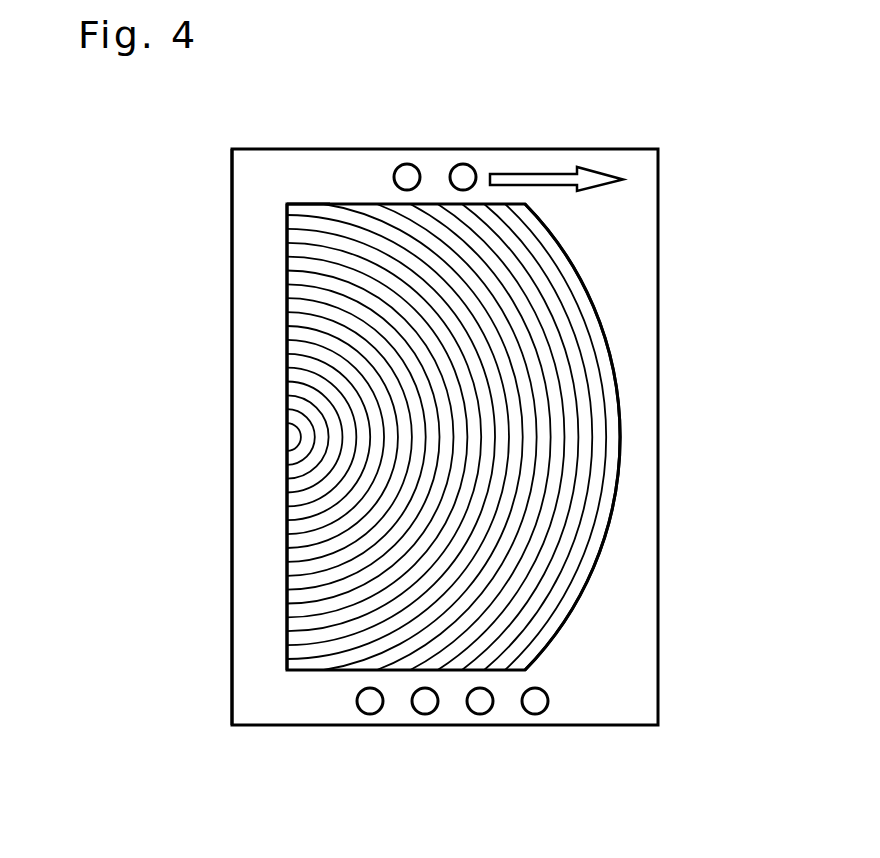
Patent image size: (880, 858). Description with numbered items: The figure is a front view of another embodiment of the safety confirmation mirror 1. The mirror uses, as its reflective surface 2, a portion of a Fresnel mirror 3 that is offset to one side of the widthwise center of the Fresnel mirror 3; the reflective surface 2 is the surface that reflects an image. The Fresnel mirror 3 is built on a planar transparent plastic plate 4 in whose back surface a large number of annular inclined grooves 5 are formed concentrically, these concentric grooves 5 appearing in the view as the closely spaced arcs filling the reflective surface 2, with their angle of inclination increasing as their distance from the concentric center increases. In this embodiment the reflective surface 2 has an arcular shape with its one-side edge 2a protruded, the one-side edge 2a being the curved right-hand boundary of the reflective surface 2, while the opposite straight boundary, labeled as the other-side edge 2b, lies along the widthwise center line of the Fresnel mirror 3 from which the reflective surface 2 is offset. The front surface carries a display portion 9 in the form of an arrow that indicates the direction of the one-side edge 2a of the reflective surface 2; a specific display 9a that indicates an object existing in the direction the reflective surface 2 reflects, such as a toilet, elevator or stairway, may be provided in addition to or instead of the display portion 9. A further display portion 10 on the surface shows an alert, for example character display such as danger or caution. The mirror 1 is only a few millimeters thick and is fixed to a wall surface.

The safety confirmation mirror 1 is at (212, 226).
The reflective surface 2 is at (403, 376).
The one-side edge 2a is at (620, 437).
The straight edge (center line C1) of electrode pattern 2b is at (287, 372).
The Fresnel mirror 3 is at (310, 205).
The transparent plastic plate 4 is at (230, 643).
The inclined grooves 5 is at (297, 500).
The display portion 9 is at (537, 178).
The specific display 9a is at (483, 160).
The display portion 10 is at (560, 713).